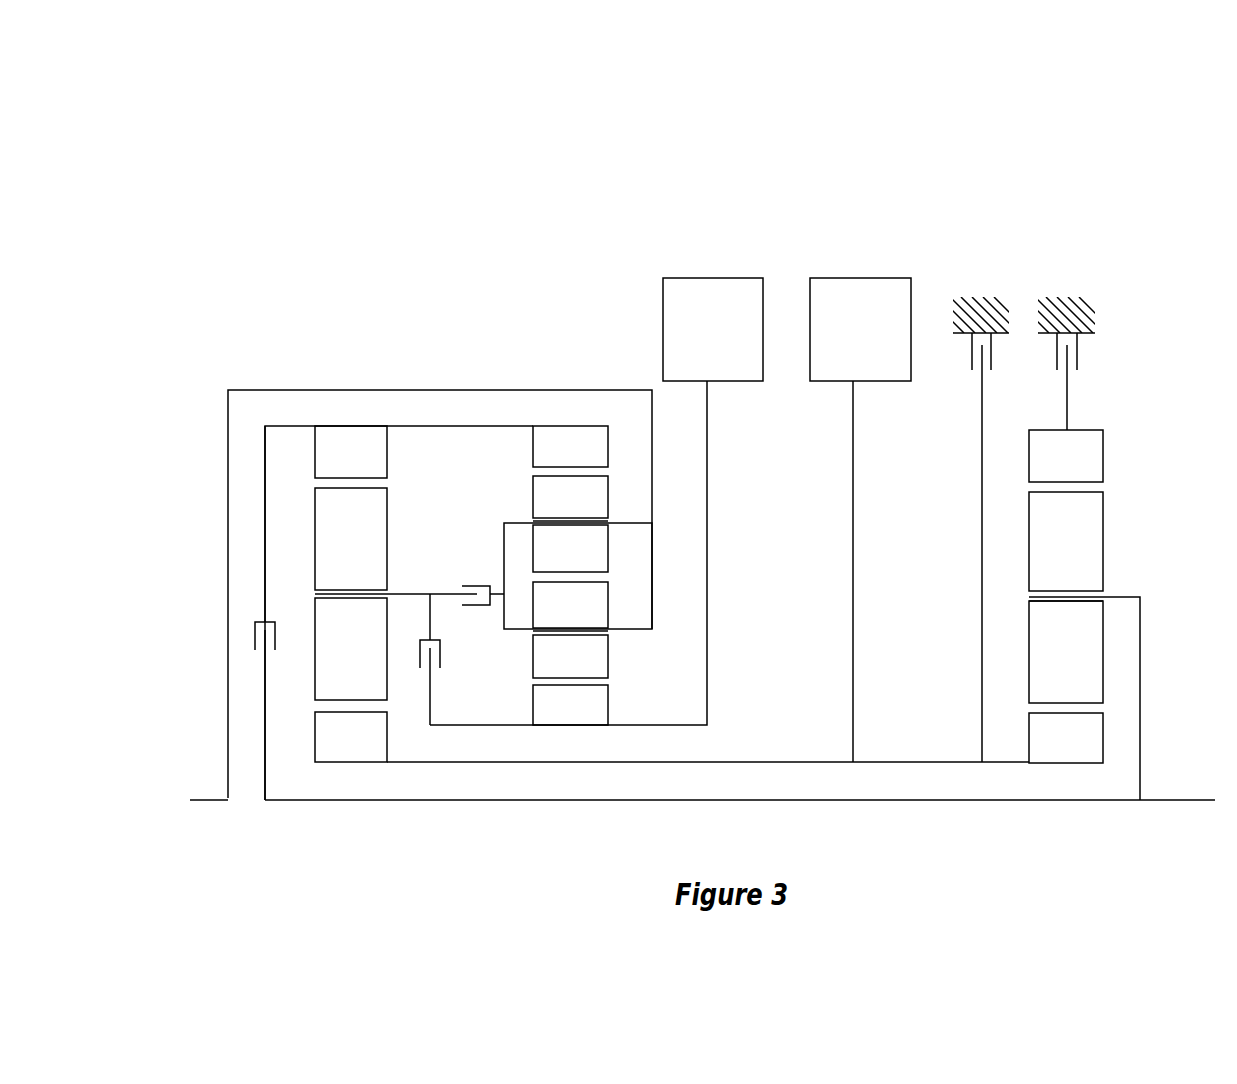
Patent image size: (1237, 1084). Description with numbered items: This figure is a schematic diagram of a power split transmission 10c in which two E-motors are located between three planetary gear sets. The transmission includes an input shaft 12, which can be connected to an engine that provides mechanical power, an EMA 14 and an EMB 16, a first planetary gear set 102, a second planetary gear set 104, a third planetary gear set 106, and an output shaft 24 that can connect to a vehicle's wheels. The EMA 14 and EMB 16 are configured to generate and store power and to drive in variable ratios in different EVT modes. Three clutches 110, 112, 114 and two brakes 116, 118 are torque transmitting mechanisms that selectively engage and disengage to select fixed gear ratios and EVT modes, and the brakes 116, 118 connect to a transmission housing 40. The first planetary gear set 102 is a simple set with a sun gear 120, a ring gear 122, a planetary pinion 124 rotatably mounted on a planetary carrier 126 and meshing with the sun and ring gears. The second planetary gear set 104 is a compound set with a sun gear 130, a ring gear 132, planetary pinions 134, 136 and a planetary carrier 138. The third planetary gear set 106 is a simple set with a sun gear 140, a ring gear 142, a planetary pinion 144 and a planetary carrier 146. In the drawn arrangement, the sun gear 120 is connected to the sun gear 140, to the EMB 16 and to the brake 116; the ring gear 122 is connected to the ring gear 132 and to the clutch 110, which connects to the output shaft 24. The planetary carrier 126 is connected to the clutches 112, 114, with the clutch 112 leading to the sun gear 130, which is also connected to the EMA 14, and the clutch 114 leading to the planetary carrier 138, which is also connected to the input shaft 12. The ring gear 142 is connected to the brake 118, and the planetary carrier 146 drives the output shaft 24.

The power split transmission 10c is at (738, 160).
The input shaft 12 is at (208, 800).
The EMA 14 is at (722, 278).
The EMB 16 is at (861, 278).
The output shaft 24 is at (1165, 800).
The transmission housing 40 is at (982, 276).
The first planetary gear set 102 is at (339, 362).
The second planetary gear set 104 is at (560, 362).
The third planetary gear set 106 is at (1111, 398).
The clutch 110 is at (286, 616).
The clutch 112 is at (455, 660).
The clutch 114 is at (478, 617).
The brake 116 is at (940, 350).
The brake 118 is at (1104, 352).
The sun gear 120 is at (315, 735).
The ring gear 122 is at (388, 452).
The planetary pinion 124 is at (313, 538).
The planetary carrier 126 is at (411, 594).
The sun gear 130 is at (570, 727).
The ring gear 132 is at (533, 447).
The planetary pinion 134 is at (608, 503).
The planetary pinion 136 is at (608, 652).
The planetary carrier 138 is at (652, 580).
The sun gear 140 is at (1062, 765).
The ring gear 142 is at (1103, 455).
The planetary pinion 144 is at (1103, 541).
The planetary carrier 146 is at (1140, 615).